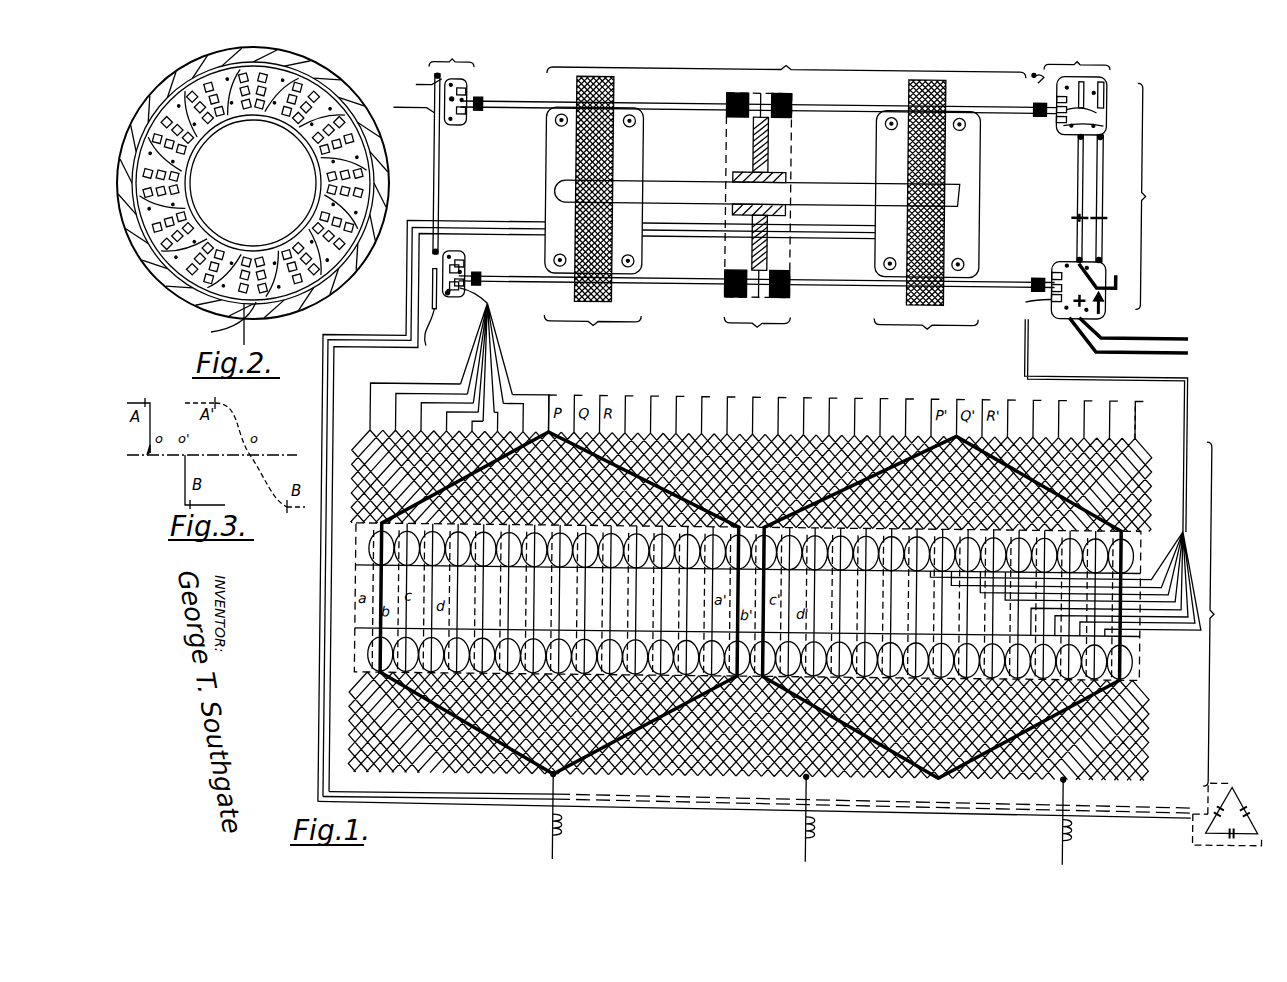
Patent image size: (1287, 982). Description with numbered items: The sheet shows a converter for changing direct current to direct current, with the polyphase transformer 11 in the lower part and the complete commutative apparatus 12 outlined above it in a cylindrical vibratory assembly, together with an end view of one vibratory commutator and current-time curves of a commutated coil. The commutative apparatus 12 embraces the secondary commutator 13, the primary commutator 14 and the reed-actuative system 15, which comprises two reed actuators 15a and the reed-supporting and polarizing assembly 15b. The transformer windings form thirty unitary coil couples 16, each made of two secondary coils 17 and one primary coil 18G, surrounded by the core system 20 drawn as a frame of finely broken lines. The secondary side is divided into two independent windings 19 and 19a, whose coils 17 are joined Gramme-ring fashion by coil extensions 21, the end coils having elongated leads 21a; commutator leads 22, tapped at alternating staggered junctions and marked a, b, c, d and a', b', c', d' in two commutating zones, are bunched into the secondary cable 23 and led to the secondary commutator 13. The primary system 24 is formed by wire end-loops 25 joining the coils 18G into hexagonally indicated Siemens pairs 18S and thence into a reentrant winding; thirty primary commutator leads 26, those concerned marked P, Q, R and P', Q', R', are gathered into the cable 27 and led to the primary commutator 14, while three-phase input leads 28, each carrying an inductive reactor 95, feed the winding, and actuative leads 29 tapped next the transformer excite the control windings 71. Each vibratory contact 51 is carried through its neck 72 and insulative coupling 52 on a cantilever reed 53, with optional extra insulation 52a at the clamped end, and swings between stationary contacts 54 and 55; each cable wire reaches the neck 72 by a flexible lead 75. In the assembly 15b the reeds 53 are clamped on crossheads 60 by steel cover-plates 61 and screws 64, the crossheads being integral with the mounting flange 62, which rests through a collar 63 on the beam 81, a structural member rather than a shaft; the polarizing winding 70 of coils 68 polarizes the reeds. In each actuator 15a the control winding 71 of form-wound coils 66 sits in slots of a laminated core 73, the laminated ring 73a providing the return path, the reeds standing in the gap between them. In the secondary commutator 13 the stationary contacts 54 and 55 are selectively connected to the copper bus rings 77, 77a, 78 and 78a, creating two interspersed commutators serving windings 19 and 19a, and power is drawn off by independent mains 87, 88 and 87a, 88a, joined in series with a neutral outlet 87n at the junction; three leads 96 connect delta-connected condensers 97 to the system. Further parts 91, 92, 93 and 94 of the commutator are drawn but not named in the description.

In FIG. 1, the polyphase transformer 11 is at (1223, 614).
In FIG. 1, the commutative apparatus 12 is at (1154, 196).
In FIG. 1, the secondary commutator 13 is at (1069, 182).
In FIG. 1, the primary commutator 14 is at (450, 84).
In FIG. 1, the reed-actuative system 15 is at (786, 58).
In FIG. 1, the reed actuator 15a is at (761, 329).
In FIG. 1, the reed-supporting and polarizing assembly 15b is at (758, 217).
In FIG. 1, the unitary coil couple 16 is at (380, 677).
In FIG. 1, the secondary coil 17 is at (365, 548).
In FIG. 1, the primary coil 18G is at (376, 607).
In FIG. 1, the Siemens coil pair 18S is at (583, 772).
In FIG. 1, the secondary winding 19 is at (1134, 553).
In FIG. 1, the secondary winding 19a is at (1135, 654).
In FIG. 1, the core system 20 is at (1136, 674).
In FIG. 1, the coil extensions or leads 21 is at (986, 626).
In FIG. 1, the end-coil leads 21a is at (905, 626).
In FIG. 1, the secondary commutator leads 22 is at (1148, 626).
In FIG. 1, the secondary cable 23 is at (1024, 376).
In FIG. 1, the primary system 24 is at (362, 423).
In FIG. 1, the wire end-loops 25 is at (653, 392).
In FIG. 1, the primary commutator leads 26 is at (510, 382).
In FIG. 2, the primary cable 27 is at (172, 90).
In FIG. 1, the primary cable 27 is at (492, 318).
In FIG. 1, the three-phase input leads 28 is at (555, 785).
In FIG. 1, the actuative leads 29 is at (500, 222).
In FIG. 1, the vibratory contact 51 is at (462, 270).
In FIG. 1, the insulative coupling 52 is at (480, 98).
In FIG. 1, the extra insulation 52a is at (723, 106).
In FIG. 1, the cantilever reed 53 is at (650, 99).
In FIG. 1, the stationary contact 54 is at (463, 259).
In FIG. 1, the stationary contact 55 is at (456, 300).
In FIG. 1, the crosshead 60 is at (728, 280).
In FIG. 1, the steel cover-plate 61 is at (771, 288).
In FIG. 1, the mounting flange 62 is at (765, 142).
In FIG. 1, the collar 63 is at (783, 206).
In FIG. 1, the screws 64 is at (735, 288).
In FIG. 1, the form-wound coils 66 is at (550, 116).
In FIG. 1, the polarizing coils 68 is at (775, 95).
In FIG. 1, the polarizing winding 70 is at (788, 150).
In FIG. 1, the control winding 71 is at (543, 172).
In FIG. 1, the neck portion or stud 72 is at (464, 110).
In FIG. 1, the laminated core 73 is at (610, 172).
In FIG. 1, the laminated steel ring 73a is at (610, 297).
In FIG. 1, the flexible lead 75 is at (483, 294).
In FIG. 1, the copper bus ring 77 is at (1073, 208).
In FIG. 1, the copper bus ring 77a is at (1122, 208).
In FIG. 1, the copper bus ring 78 is at (1077, 340).
In FIG. 1, the copper bus ring 78a is at (1095, 310).
In FIG. 1, the beam 81 is at (697, 197).
In FIG. 1, the output main 87 is at (1104, 282).
In FIG. 1, the output main 87a is at (1122, 264).
In FIG. 1, the neutral outlet 87n is at (1125, 273).
In FIG. 1, the output main 88 is at (1138, 348).
In FIG. 1, the output main 88a is at (1138, 327).
In FIG. 2, the rotor bore / shaft 91 is at (277, 234).
In FIG. 1, the rotor bore / shaft 91 is at (435, 145).
In FIG. 2, the lead 92 is at (223, 334).
In FIG. 1, the lead 92 is at (437, 312).
In FIG. 1, the lead 93 is at (412, 118).
In FIG. 1, the lead 94 is at (410, 93).
In FIG. 1, the inductive reactor 95 is at (567, 820).
In FIG. 1, the condenser leads 96 is at (1142, 810).
In FIG. 1, the condensers 97 is at (1252, 782).